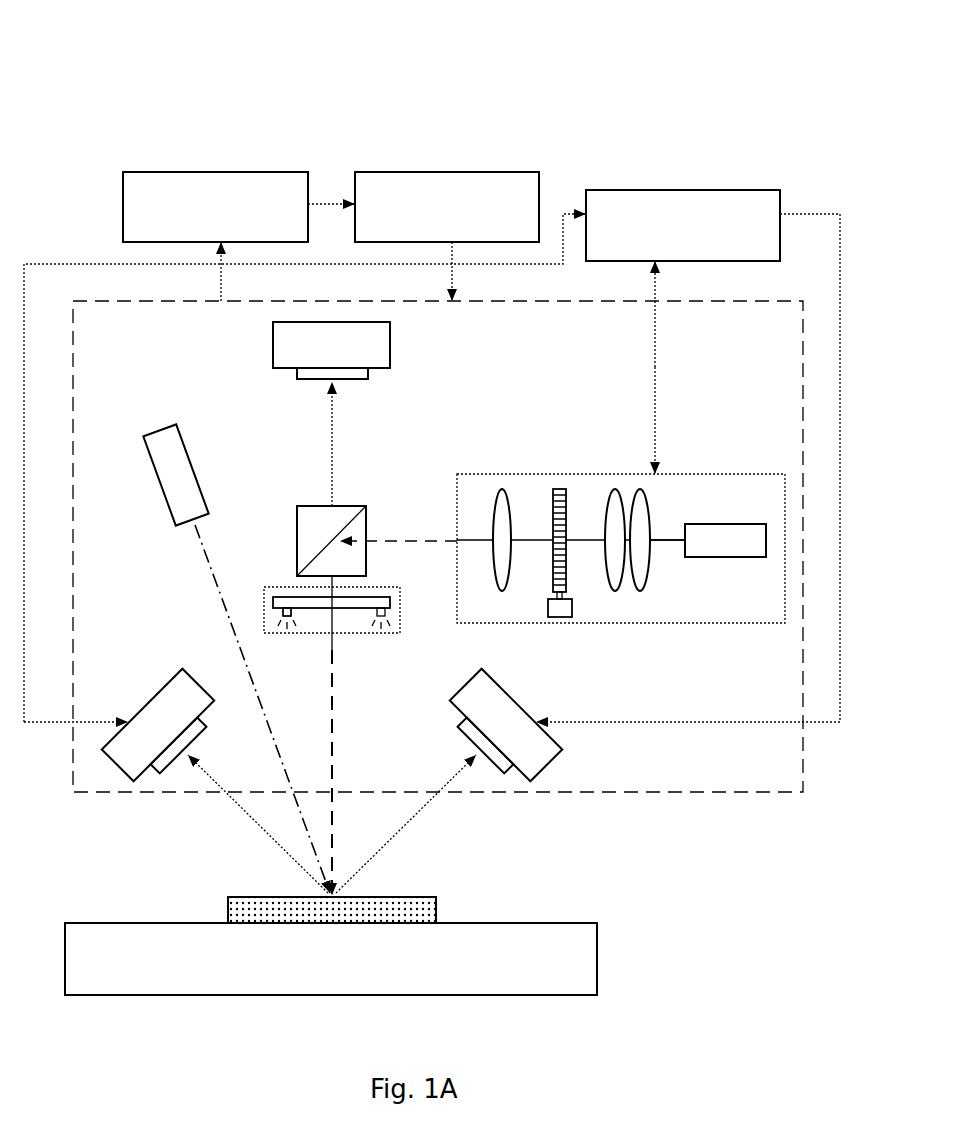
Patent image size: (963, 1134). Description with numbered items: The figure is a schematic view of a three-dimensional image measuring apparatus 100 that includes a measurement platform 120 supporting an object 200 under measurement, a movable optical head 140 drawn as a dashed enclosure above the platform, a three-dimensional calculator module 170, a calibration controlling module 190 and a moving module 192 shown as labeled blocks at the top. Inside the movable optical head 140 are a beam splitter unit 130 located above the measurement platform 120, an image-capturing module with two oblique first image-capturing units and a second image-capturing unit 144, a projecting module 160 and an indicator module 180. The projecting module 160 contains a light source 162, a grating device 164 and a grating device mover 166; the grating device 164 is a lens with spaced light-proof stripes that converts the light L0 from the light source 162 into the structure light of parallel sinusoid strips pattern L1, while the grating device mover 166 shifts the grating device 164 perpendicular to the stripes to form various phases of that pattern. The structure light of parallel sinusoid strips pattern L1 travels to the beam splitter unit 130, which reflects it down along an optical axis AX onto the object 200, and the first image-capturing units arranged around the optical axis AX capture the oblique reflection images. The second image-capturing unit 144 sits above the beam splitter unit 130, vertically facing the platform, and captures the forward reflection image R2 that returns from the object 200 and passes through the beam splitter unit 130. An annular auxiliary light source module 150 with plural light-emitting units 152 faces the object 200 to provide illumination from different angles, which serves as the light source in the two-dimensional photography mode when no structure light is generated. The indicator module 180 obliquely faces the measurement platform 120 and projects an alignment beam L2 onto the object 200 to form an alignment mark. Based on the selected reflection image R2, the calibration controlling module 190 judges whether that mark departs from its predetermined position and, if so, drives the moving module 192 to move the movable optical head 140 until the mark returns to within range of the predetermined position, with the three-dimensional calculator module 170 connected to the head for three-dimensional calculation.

The three-dimensional image measuring apparatus 100 is at (152, 88).
The measurement platform 120 is at (500, 923).
The beam splitter unit 130 is at (366, 524).
The movable optical head 140 is at (690, 792).
The second image-capturing unit 144 is at (390, 352).
The annular auxiliary light source module 150 is at (293, 634).
The light-emitting unit 152 is at (285, 606).
The projecting module 160 is at (621, 528).
The light source 162 is at (727, 557).
The grating device 164 is at (557, 489).
The grating device mover 166 is at (573, 608).
The three-dimensional calculator module 170 is at (731, 190).
The indicator module 180 is at (205, 470).
The calibration controlling module 190 is at (246, 172).
The moving module 192 is at (448, 172).
The object under measurement 200 is at (228, 912).
The forward reflection image R2 is at (333, 468).
The structure light of parallel sinusoid strips pattern L1 is at (413, 543).
The alignment beam L2 is at (213, 571).
The light L0 is at (663, 543).
The optical axis AX is at (332, 712).